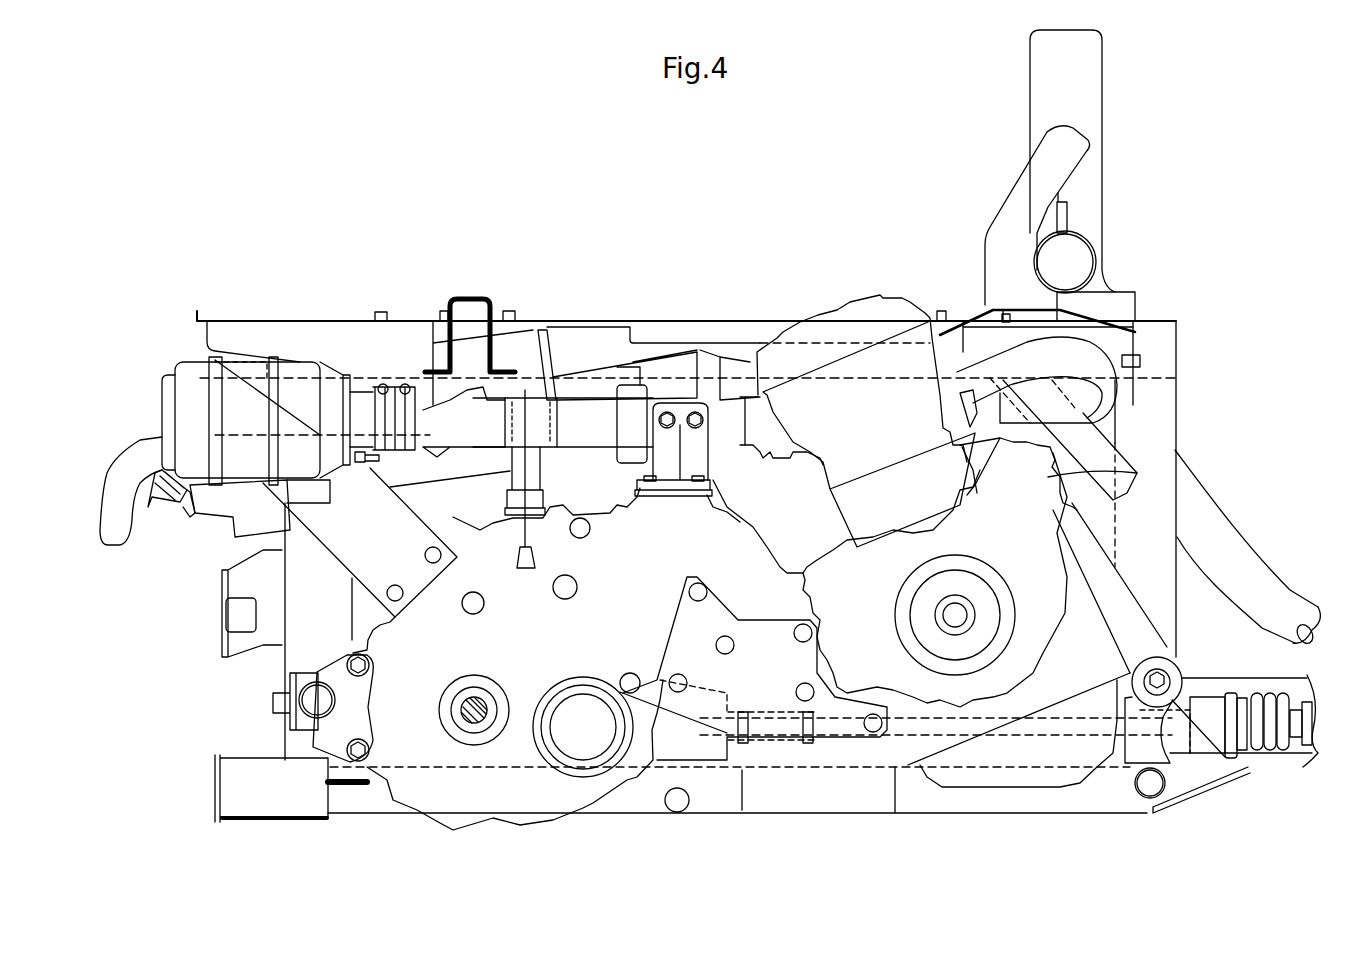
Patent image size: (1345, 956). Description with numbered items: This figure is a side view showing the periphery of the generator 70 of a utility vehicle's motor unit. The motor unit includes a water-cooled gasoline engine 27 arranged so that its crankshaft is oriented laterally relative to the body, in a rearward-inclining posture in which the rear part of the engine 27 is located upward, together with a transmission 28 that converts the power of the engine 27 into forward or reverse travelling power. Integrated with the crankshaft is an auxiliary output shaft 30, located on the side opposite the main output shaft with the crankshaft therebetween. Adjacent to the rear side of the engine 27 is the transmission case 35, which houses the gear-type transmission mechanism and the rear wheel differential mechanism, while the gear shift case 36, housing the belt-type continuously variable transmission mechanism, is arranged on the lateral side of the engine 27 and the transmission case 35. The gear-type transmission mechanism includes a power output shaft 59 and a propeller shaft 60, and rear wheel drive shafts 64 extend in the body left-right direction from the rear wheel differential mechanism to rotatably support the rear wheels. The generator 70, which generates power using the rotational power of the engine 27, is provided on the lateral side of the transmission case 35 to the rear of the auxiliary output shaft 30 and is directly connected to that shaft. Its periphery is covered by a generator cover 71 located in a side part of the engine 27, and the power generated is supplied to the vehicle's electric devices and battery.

The engine 27 is at (848, 312).
The transmission 28 is at (612, 466).
The auxiliary output shaft 30 is at (960, 610).
The transmission case 35 is at (490, 528).
The gear shift case 36 is at (733, 470).
The power output shaft 59 is at (903, 737).
The propeller shaft 60 is at (1303, 767).
The rear wheel drive shaft 64 is at (476, 700).
The generator 70 is at (1205, 465).
The generator cover 71 is at (1150, 480).